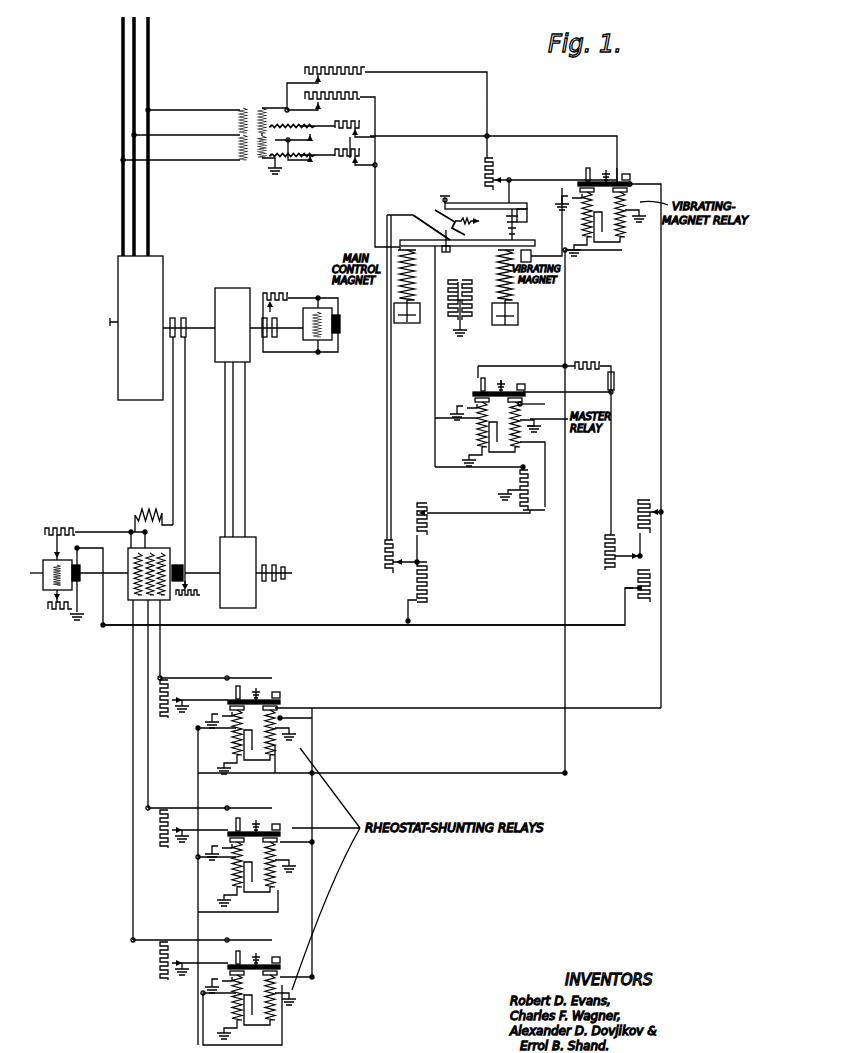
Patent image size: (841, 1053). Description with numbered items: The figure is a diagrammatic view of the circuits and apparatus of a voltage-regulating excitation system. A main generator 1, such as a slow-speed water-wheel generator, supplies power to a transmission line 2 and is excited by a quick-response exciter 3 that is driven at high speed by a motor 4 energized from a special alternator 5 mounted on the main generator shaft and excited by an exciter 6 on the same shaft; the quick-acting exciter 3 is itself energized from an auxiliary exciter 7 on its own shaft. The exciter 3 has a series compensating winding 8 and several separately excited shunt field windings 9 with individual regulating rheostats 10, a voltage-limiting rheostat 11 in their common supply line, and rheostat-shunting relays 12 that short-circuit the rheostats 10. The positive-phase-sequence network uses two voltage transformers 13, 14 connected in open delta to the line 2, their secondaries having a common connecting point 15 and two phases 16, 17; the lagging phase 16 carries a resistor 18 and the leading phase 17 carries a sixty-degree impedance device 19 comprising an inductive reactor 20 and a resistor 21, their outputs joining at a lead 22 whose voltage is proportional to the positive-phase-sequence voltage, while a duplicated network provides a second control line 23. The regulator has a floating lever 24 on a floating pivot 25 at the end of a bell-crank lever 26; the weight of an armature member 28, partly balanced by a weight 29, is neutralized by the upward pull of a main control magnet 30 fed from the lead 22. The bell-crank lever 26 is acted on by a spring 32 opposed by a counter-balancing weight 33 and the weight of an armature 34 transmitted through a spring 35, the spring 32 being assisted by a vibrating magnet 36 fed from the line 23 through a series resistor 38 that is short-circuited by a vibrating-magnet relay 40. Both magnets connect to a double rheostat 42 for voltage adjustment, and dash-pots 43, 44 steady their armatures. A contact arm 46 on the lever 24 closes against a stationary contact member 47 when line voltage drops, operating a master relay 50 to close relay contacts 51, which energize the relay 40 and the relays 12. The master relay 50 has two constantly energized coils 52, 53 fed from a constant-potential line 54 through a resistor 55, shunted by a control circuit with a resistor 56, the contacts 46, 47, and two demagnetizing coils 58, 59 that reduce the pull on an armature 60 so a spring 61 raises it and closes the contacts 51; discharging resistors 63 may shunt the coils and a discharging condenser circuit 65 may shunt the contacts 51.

The main generator 1 is at (143, 308).
The transmission line 2 is at (149, 60).
The quick-response exciter 3 is at (132, 550).
The motor 4 is at (242, 582).
The special alternator 5 is at (236, 335).
The exciter 6 is at (318, 340).
The auxiliary exciter 7 is at (45, 568).
The series compensating winding 8 is at (146, 509).
The shunt field windings 9 is at (140, 582).
The regulating rheostats 10 is at (160, 690).
The voltage-limiting rheostat 11 is at (58, 528).
The rheostat-shunting relays 12 is at (300, 746).
The voltage transformer 13 is at (252, 103).
The voltage transformer 14 is at (246, 191).
The common connecting point 15 is at (275, 175).
The lagging phase 16 is at (286, 109).
The leading phase 17 is at (288, 139).
The resistor 18 is at (376, 100).
The 60°-impedance device 19 is at (341, 183).
The inductive reactor 20 is at (322, 135).
The resistor 21 is at (350, 165).
The lead 22 is at (379, 165).
The second control line 23 is at (489, 134).
The floating lever 24 is at (480, 246).
The floating pivot 25 is at (445, 250).
The bell-crank lever 26 is at (466, 203).
The armature member 28 is at (419, 301).
The weight 29 is at (541, 225).
The main control magnet 30 is at (398, 250).
The spring 32 is at (472, 230).
The counter-balancing weight 33 is at (528, 214).
The armature 34 is at (512, 300).
The spring 35 is at (515, 232).
The vibrating magnet 36 is at (534, 285).
The series resistor 38 is at (496, 170).
The vibrating-magnet relay 40 is at (654, 183).
The double rheostat 42 is at (462, 310).
The dash-pot 43 is at (407, 323).
The dash-pot 44 is at (506, 325).
The contact arm 46 is at (446, 222).
The stationary contact member 47 is at (428, 225).
The master relay 50 is at (557, 437).
The relay contacts 51 is at (478, 380).
The constantly energized coil 52 is at (475, 430).
The constantly energized coil 53 is at (530, 404).
The constant-potential line 54 is at (488, 625).
The resistor 55 is at (428, 525).
The resistor 56 is at (384, 550).
The demagnetizing coil 58 is at (475, 402).
The demagnetizing coil 59 is at (525, 440).
The armature 60 is at (518, 392).
The spring 61 is at (503, 385).
The discharging resistors 63 is at (530, 493).
The discharging condenser circuit 65 is at (613, 366).